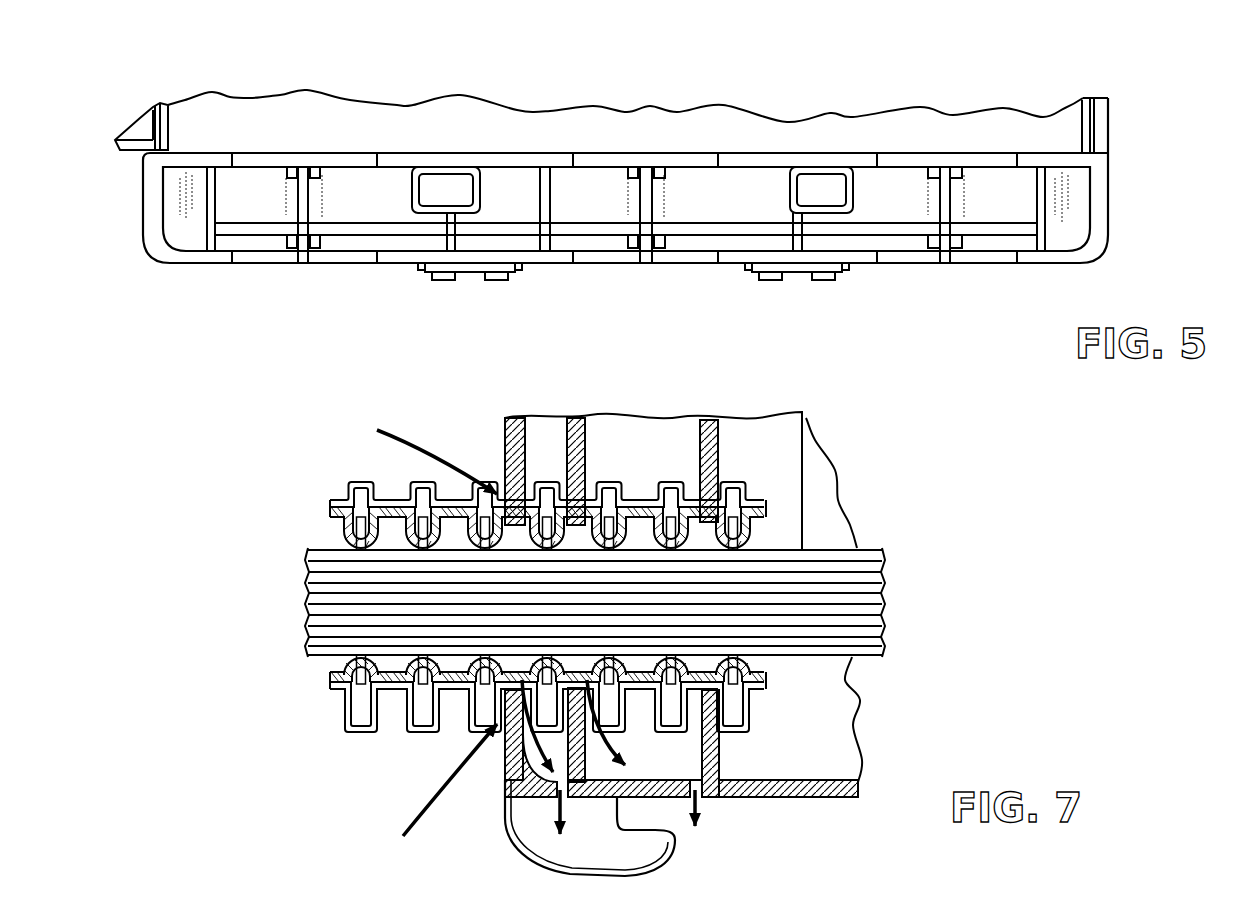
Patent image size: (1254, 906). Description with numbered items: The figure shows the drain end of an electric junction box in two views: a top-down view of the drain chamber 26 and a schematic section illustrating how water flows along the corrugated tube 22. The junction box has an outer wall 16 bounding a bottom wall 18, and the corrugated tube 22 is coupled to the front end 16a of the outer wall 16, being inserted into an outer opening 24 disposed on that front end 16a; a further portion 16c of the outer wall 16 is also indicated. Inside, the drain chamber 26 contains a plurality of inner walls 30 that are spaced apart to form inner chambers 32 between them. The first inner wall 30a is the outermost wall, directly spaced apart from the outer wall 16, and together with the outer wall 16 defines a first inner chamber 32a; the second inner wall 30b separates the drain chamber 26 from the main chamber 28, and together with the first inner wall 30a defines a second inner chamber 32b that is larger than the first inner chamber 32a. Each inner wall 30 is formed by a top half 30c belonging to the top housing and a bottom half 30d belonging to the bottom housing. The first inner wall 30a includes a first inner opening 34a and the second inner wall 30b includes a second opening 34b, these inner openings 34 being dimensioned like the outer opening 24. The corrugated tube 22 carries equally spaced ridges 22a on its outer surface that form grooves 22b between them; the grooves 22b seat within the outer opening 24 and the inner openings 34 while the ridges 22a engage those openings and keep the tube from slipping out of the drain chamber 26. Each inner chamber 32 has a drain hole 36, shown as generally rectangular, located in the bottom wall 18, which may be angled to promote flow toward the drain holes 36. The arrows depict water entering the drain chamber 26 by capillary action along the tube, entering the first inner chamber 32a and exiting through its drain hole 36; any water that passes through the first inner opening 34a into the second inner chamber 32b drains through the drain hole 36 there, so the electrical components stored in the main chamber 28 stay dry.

In FIG. 5, the outer wall 16 is at (587, 219).
In FIG. 7, the outer wall 16 is at (558, 811).
In FIG. 7, the front end 16a is at (505, 747).
In FIG. 5, the housing third portion 16c is at (1020, 265).
In FIG. 7, the bottom wall 18 is at (850, 798).
In FIG. 7, the corrugated tube 22 is at (522, 567).
In FIG. 7, the ridges 22a is at (485, 482).
In FIG. 7, the grooves 22b is at (578, 418).
In FIG. 5, the outer opening 24 is at (888, 274).
In FIG. 7, the outer opening 24 is at (503, 527).
In FIG. 5, the drain chamber 26 is at (1136, 182).
In FIG. 5, the main chamber 28 is at (1063, 120).
In FIG. 5, the inner walls 30 is at (624, 182).
In FIG. 7, the inner walls 30 is at (638, 598).
In FIG. 5, the first inner wall 30a is at (888, 241).
In FIG. 7, the first inner wall 30a is at (572, 455).
In FIG. 5, the second inner wall 30b is at (848, 132).
In FIG. 7, the second inner wall 30b is at (710, 420).
In FIG. 7, the top half of the inner walls 30c is at (668, 545).
In FIG. 5, the bottom half of the inner walls 30d is at (880, 132).
In FIG. 7, the bottom half of the inner walls 30d is at (572, 800).
In FIG. 5, the inner chamber 32 is at (703, 222).
In FIG. 7, the inner chamber 32 is at (595, 575).
In FIG. 5, the first inner chamber 32a is at (1018, 246).
In FIG. 7, the first inner chamber 32a is at (515, 440).
In FIG. 5, the second inner chamber 32b is at (1018, 198).
In FIG. 7, the second inner chamber 32b is at (640, 445).
In FIG. 5, the inner opening 34 is at (626, 185).
In FIG. 7, the inner opening 34 is at (785, 729).
In FIG. 5, the first inner opening 34a is at (910, 241).
In FIG. 5, the second opening 34b is at (938, 130).
In FIG. 7, the second opening 34b is at (917, 692).
In FIG. 5, the drain hole 36 is at (962, 167).